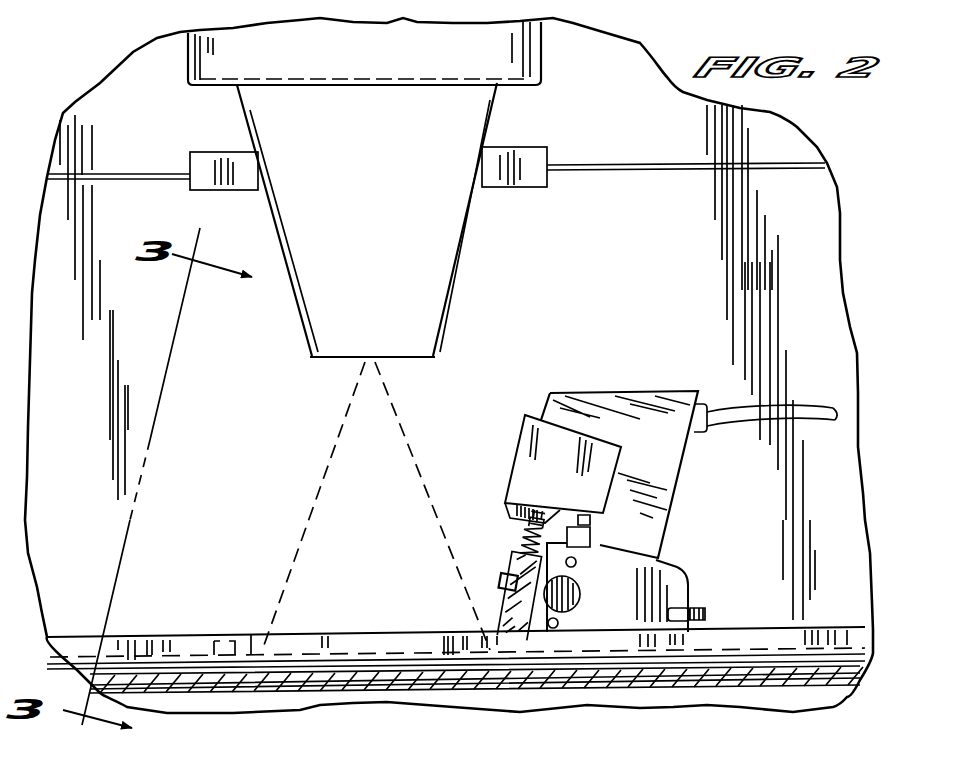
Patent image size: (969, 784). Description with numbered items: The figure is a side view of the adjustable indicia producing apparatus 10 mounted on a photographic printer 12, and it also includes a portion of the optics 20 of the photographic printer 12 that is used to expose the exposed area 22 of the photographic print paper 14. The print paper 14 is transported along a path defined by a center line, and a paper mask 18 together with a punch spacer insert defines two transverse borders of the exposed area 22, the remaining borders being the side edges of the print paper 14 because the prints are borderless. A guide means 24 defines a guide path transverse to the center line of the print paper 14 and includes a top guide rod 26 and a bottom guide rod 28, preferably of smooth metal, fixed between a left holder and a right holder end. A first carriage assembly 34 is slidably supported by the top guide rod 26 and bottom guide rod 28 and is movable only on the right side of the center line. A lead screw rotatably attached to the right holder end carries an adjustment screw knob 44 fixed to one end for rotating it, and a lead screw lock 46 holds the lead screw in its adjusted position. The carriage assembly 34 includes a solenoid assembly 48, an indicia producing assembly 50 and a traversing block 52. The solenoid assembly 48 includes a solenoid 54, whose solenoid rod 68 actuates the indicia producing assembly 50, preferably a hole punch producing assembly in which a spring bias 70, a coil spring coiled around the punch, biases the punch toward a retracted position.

The adjustable indicia producing apparatus 10 is at (478, 540).
The photographic printer 12 is at (805, 690).
The photographic print paper 14 is at (290, 710).
The paper mask 18 is at (253, 633).
The optics 20 is at (458, 271).
The exposed area 22 is at (347, 662).
The guide means 24 is at (691, 575).
The top guide rod 26 is at (578, 561).
The bottom guide rod 28 is at (559, 622).
The first carriage assembly 34 is at (690, 483).
The adjustment screw knob 44 is at (574, 591).
The lead screw lock 46 is at (512, 586).
The solenoid assembly 48 is at (638, 442).
The indicia producing assembly 50 is at (500, 610).
The traversing block 52 is at (572, 533).
The solenoid 54 is at (530, 440).
The solenoid rod 68 is at (522, 518).
The spring bias 70 is at (525, 549).